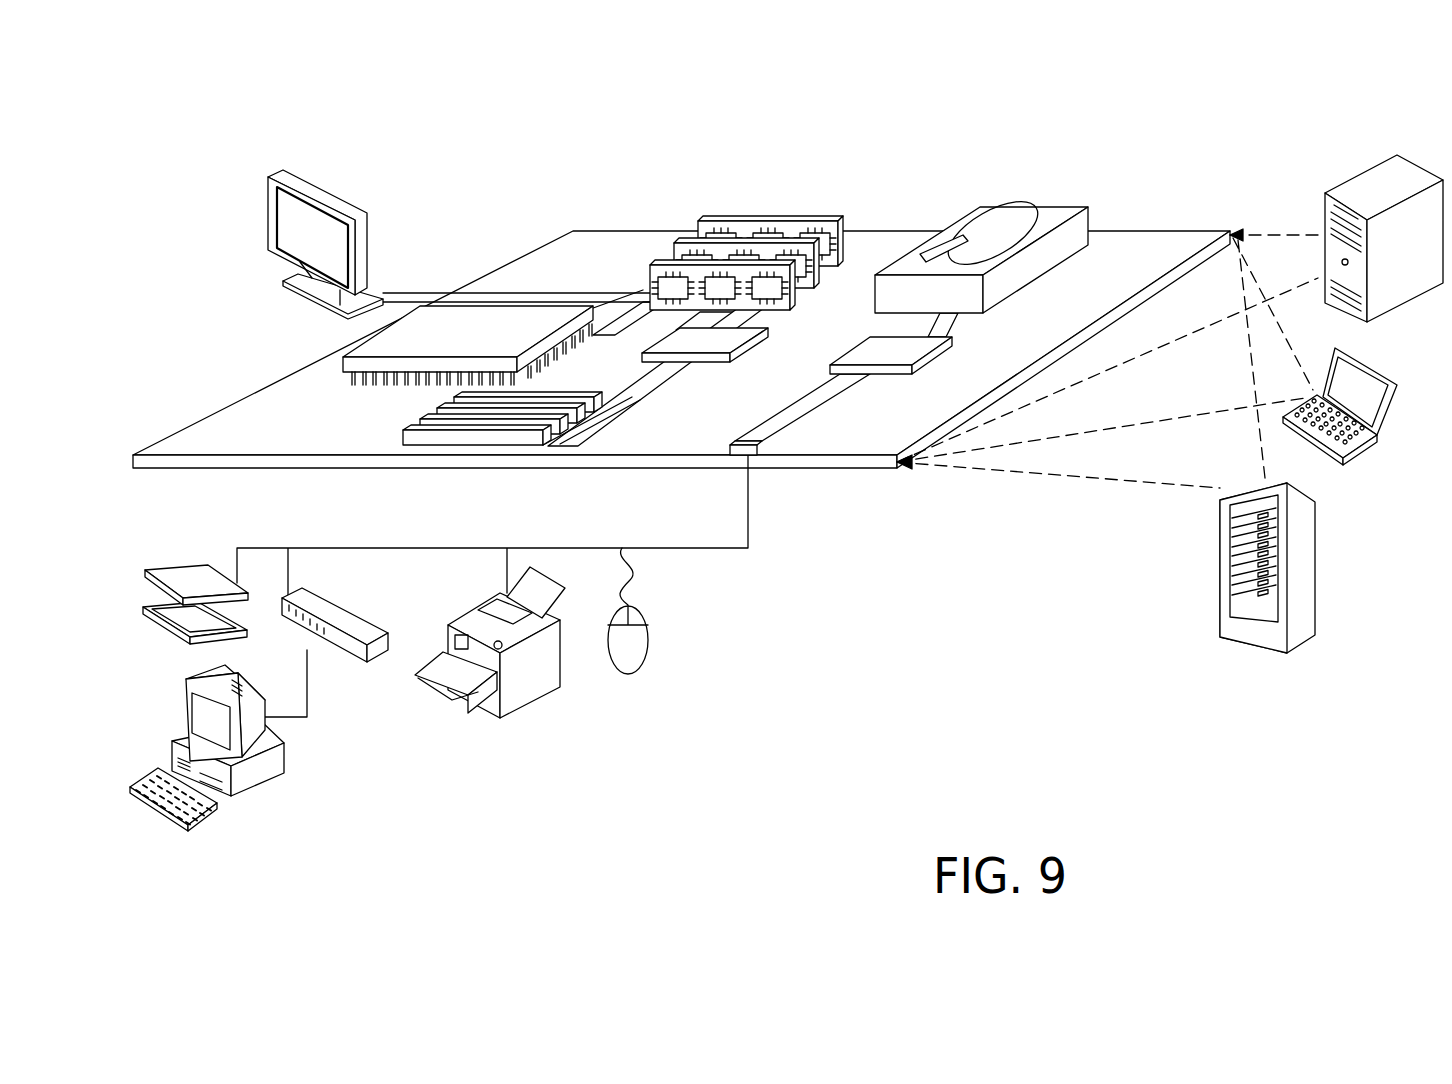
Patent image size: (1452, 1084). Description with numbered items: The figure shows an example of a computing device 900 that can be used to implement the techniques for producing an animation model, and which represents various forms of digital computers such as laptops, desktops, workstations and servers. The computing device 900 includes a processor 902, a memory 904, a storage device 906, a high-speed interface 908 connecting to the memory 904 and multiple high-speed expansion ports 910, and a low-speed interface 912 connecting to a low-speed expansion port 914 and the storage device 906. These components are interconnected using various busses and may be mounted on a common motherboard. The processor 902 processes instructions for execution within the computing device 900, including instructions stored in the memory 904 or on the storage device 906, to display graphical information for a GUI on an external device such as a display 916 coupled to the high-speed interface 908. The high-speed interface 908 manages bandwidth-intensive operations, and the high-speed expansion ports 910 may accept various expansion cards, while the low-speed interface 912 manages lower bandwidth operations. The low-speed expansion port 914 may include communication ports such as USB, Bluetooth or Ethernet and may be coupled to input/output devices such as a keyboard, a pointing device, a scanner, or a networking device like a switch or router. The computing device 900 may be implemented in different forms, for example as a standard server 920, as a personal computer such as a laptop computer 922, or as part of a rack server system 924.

The computing device 900 is at (462, 194).
The processor 902 is at (353, 366).
The memory 904 is at (747, 220).
The storage device 906 is at (975, 210).
The high-speed interface 908 is at (688, 343).
The high-speed expansion ports 910 is at (418, 423).
The low-speed interface 912 is at (882, 352).
The low-speed expansion port 914 is at (757, 455).
The display 916 is at (268, 217).
The standard server 920 is at (1327, 212).
The laptop computer 922 is at (1372, 370).
The rack server system 924 is at (1218, 607).